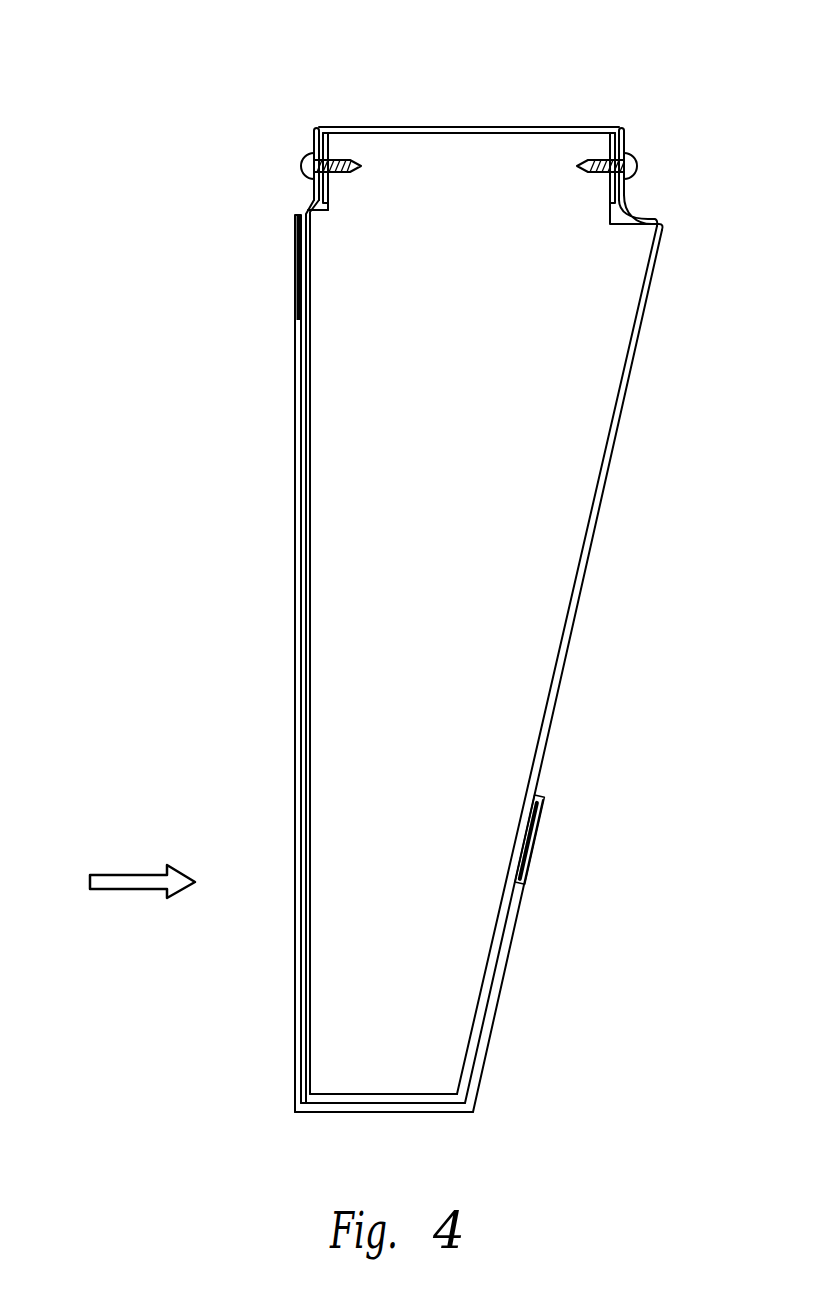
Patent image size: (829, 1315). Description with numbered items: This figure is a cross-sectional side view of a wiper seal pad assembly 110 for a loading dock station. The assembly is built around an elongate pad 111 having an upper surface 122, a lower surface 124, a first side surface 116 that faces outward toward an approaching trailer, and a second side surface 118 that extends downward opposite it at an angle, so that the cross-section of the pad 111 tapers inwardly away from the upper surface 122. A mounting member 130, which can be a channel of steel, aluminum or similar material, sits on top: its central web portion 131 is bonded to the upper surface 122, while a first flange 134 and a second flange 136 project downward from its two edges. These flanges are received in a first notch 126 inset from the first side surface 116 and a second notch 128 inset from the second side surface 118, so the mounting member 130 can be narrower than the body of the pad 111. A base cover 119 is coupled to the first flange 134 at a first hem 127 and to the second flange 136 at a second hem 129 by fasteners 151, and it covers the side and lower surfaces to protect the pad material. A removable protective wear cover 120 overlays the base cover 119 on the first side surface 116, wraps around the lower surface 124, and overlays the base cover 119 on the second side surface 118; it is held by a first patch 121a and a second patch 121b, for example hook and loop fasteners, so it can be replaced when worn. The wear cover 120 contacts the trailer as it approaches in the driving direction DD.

The pad assembly 110 is at (296, 718).
The elongate pad 111 is at (597, 322).
The first side surface 116 is at (312, 377).
The second side surface 118 is at (604, 480).
The base cover 119 is at (625, 405).
The protective wear cover 120 is at (296, 500).
The first patch 121a is at (303, 208).
The second patch 121b is at (541, 794).
The upper surface 122 is at (425, 127).
The lower surface 124 is at (347, 1095).
The first notch 126 is at (313, 190).
The first hem 127 is at (310, 143).
The second notch 128 is at (637, 212).
The second hem 129 is at (630, 147).
The mounting member 130 is at (492, 128).
The central web portion 131 is at (568, 127).
The first flange 134 is at (318, 141).
The second flange 136 is at (627, 143).
The fasteners 151 is at (302, 165).
The driving direction DD is at (126, 878).